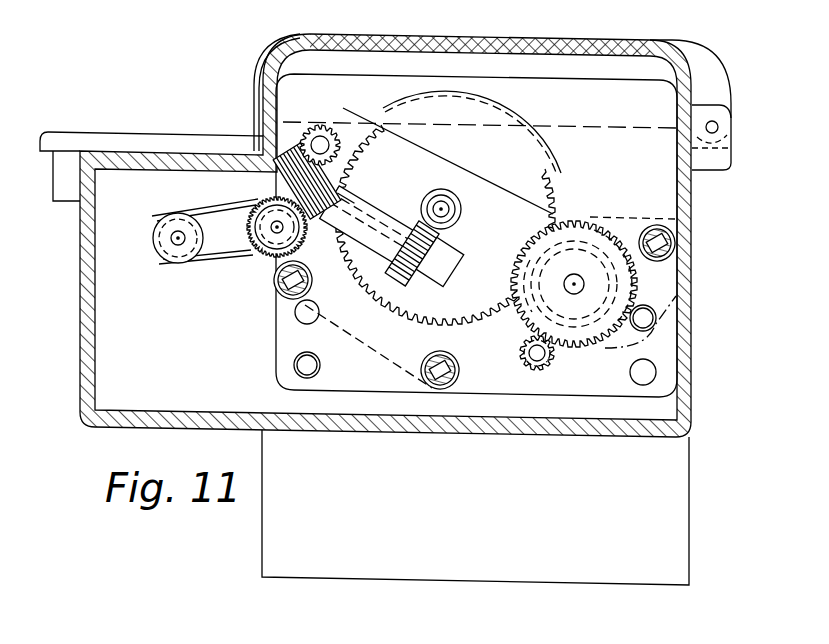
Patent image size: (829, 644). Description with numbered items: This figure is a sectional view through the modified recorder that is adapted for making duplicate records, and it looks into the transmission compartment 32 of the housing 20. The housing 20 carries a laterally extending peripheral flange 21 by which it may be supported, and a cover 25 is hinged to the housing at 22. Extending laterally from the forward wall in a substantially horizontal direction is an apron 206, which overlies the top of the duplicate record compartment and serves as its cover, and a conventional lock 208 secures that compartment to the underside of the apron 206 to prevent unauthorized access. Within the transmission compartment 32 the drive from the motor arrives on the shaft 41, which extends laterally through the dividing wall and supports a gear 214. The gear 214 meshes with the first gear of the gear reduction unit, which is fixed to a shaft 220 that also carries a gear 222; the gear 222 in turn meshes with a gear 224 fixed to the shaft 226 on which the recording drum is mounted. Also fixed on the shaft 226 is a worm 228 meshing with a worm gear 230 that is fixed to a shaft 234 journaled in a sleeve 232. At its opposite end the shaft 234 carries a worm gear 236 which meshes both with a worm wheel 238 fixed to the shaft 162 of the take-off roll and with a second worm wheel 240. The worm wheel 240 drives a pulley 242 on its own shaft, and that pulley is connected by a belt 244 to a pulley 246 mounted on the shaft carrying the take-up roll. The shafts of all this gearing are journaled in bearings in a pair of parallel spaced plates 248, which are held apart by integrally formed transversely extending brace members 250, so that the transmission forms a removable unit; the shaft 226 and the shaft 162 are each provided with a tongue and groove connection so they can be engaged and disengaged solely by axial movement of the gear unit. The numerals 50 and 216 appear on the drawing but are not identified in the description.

The housing 20 is at (691, 350).
The peripheral flange 21 is at (731, 154).
The hinge 22 is at (718, 127).
The cover 25 is at (473, 42).
The transmission compartment 32 is at (172, 436).
The shaft 41 is at (524, 358).
The drum 50 is at (560, 185).
The shaft of the take-off roll 162 is at (285, 123).
The apron 206 is at (110, 133).
The lock 208 is at (53, 197).
The gear 214 is at (529, 353).
The gear 216 is at (568, 228).
The shaft 220 is at (570, 287).
The gear 222 is at (590, 242).
The gear 224 is at (410, 298).
The shaft 226 is at (455, 197).
The worm 228 is at (442, 203).
The worm gear 230 is at (418, 278).
The sleeve 232 is at (375, 223).
The shaft 234 is at (340, 196).
The worm gear 236 is at (292, 150).
The worm wheel 238 is at (317, 143).
The second worm wheel 240 is at (276, 254).
The pulley 242 is at (272, 232).
The belt 244 is at (226, 212).
The pulley 246 is at (170, 262).
The plates 248 is at (583, 395).
The brace members 250 is at (285, 299).